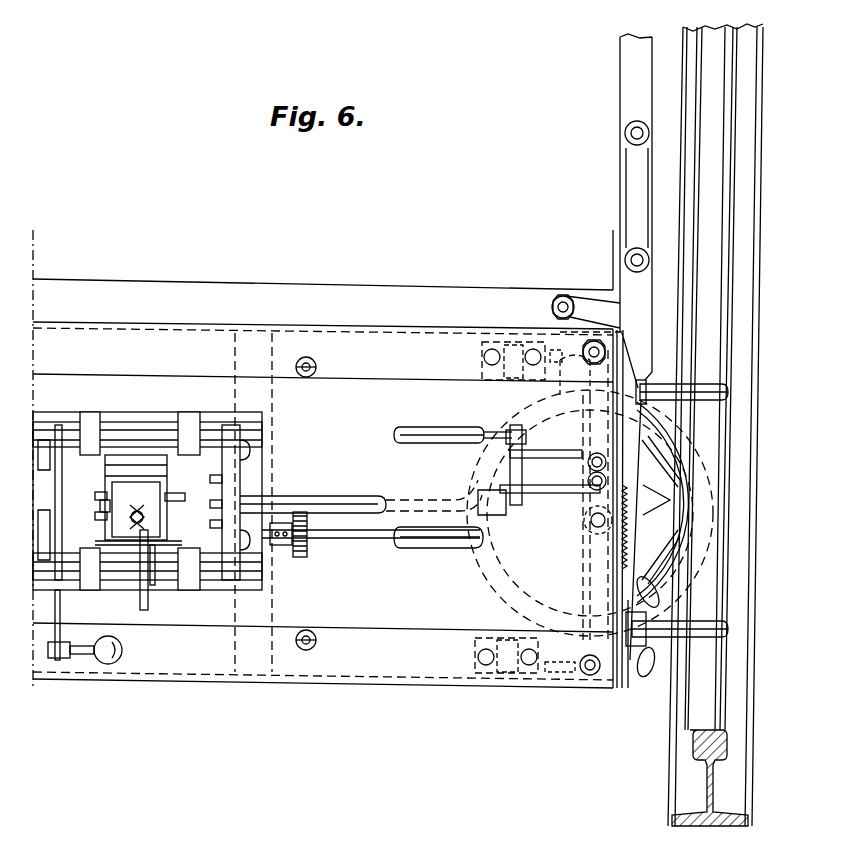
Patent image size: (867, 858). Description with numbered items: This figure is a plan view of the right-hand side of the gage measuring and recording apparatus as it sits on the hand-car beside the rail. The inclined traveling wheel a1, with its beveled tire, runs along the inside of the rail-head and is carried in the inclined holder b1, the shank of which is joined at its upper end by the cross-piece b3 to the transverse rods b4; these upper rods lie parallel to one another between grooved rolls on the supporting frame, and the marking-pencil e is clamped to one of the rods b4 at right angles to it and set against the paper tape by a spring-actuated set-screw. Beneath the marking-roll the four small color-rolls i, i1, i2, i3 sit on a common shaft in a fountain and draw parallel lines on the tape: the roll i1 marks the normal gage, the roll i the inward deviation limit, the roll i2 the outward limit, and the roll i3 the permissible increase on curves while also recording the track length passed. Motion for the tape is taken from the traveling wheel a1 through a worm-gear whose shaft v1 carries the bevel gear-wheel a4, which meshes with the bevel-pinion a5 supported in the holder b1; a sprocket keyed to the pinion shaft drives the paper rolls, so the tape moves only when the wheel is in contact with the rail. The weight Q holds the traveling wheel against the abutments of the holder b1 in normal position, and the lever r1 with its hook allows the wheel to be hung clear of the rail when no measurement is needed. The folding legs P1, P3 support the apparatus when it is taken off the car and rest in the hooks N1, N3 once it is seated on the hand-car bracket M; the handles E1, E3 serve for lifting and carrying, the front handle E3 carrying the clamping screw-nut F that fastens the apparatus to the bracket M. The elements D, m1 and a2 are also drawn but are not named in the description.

The hanger bar D is at (636, 207).
The bracket M is at (594, 311).
The hook N1 is at (316, 361).
The hook N3 is at (316, 641).
The folding leg P1 is at (517, 372).
The folding leg P3 is at (496, 643).
The lever r1 is at (402, 427).
The handle E1 is at (728, 389).
The front handle E3 is at (706, 638).
The transverse rod b4 is at (152, 440).
The cross-piece b3 is at (225, 470).
The inclined holder b1 is at (352, 503).
The housing m1 is at (100, 497).
The color-roll i is at (135, 530).
The color-roll i1 is at (145, 516).
The color-roll i2 is at (104, 505).
The color-roll i3 is at (118, 543).
The marking-pencil e is at (140, 608).
The bevel gear-wheel a4 is at (310, 536).
The bevel-pinion a5 is at (297, 559).
The shaft v1 is at (448, 548).
The traveling wheel a1 is at (636, 502).
The weight Q is at (122, 651).
The clamping screw-nut F is at (642, 672).
The rail a2 is at (680, 782).